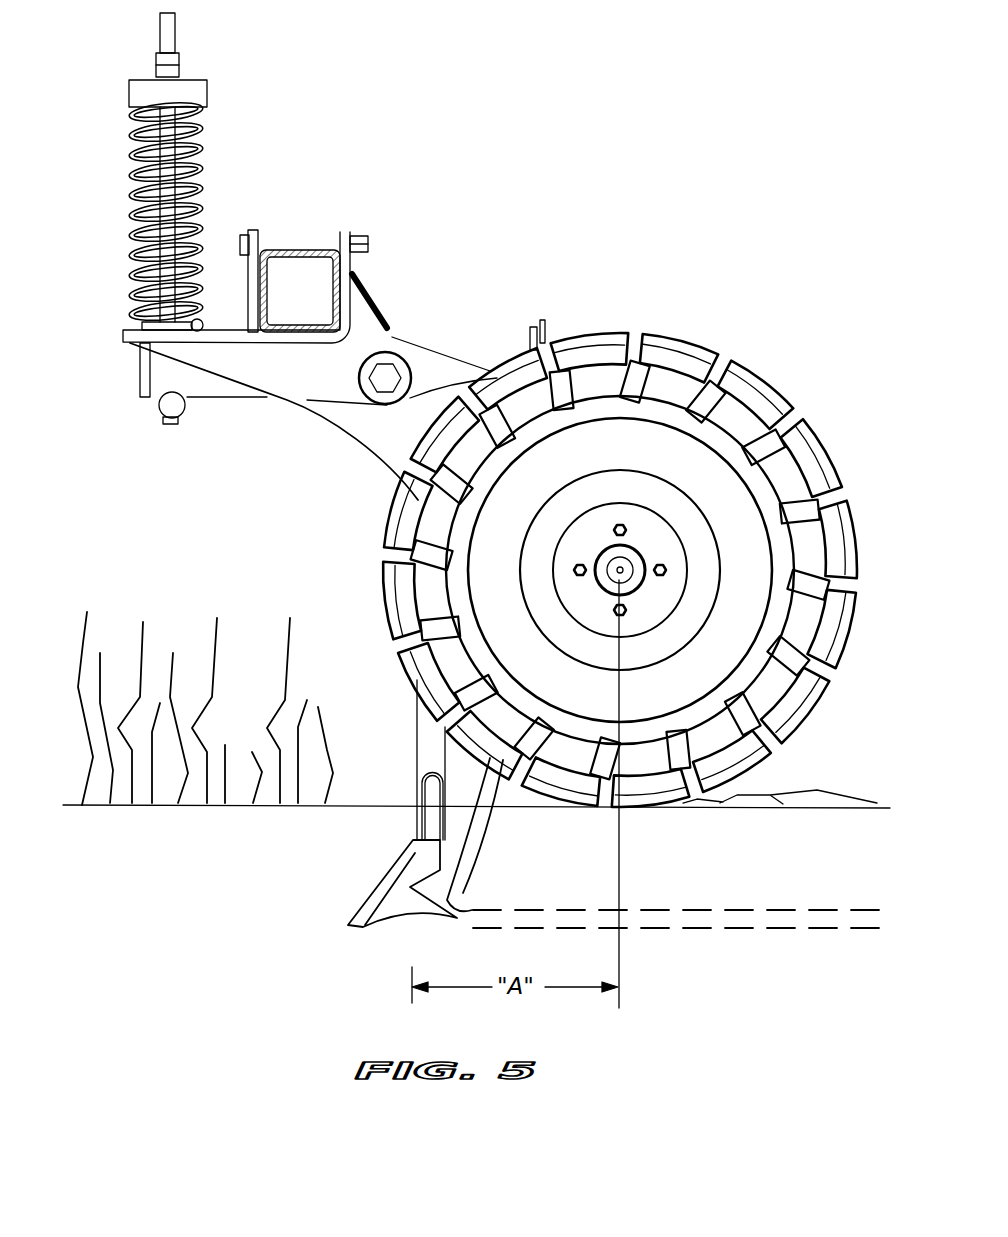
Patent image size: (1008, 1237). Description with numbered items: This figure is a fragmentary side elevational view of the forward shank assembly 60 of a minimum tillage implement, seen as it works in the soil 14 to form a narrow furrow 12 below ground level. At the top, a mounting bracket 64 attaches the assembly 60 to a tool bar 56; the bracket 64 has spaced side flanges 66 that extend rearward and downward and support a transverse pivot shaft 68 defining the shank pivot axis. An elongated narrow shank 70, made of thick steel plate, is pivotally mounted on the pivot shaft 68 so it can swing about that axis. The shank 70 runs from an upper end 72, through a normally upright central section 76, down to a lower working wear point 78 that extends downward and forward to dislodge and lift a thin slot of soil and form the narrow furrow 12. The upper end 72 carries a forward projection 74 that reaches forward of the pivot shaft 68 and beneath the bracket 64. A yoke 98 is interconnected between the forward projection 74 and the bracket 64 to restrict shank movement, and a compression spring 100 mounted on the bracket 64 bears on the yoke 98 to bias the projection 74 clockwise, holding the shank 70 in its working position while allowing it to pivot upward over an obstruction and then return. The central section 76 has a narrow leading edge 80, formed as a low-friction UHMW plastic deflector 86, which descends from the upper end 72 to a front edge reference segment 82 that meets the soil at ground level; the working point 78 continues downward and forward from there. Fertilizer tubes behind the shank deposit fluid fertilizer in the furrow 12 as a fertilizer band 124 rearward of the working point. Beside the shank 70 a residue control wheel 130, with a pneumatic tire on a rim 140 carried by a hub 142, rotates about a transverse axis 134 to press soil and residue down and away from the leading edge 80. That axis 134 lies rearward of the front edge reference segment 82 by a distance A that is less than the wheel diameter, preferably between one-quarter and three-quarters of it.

The narrow furrow 12 is at (733, 898).
The soil 14 is at (163, 813).
The tool bar 56 is at (285, 250).
The shank assembly 60 is at (634, 236).
The mounting bracket 64 is at (362, 262).
The side flanges 66 is at (305, 372).
The pivot shaft 68 is at (388, 376).
The shank 70 is at (387, 442).
The upper end 72 is at (463, 373).
The forward projection 74 is at (220, 390).
The central section 76 is at (457, 760).
The working wear point 78 is at (388, 910).
The leading edge 80 is at (417, 790).
The front edge reference segment 82 is at (413, 808).
The deflector 86 is at (433, 817).
The yoke 98 is at (168, 405).
The compression spring 100 is at (195, 152).
The fertilizer band 124 is at (812, 915).
The residue control wheel 130 is at (695, 376).
The transverse axis 134 is at (620, 570).
The rim 140 is at (723, 645).
The hub 142 is at (620, 570).